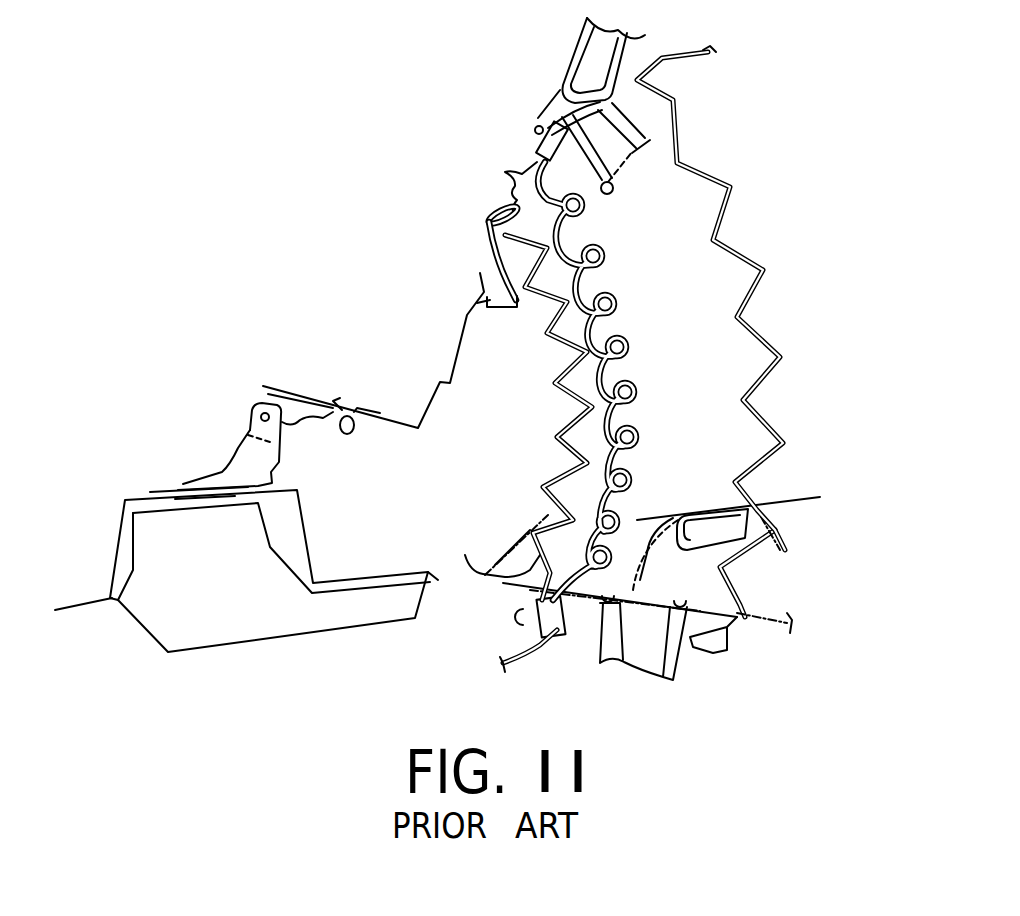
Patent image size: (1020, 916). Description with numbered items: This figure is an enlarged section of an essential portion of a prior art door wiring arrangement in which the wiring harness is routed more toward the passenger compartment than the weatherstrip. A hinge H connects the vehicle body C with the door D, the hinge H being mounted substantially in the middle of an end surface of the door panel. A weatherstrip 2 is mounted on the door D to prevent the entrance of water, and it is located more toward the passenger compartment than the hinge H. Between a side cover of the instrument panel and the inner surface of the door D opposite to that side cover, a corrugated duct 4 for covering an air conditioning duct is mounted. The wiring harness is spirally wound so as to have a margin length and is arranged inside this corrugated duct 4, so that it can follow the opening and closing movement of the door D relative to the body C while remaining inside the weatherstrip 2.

The door D is at (207, 443).
The hinge H is at (250, 408).
The weatherstrip 2 is at (360, 428).
The body C is at (307, 532).
The corrugated duct 4 is at (738, 248).